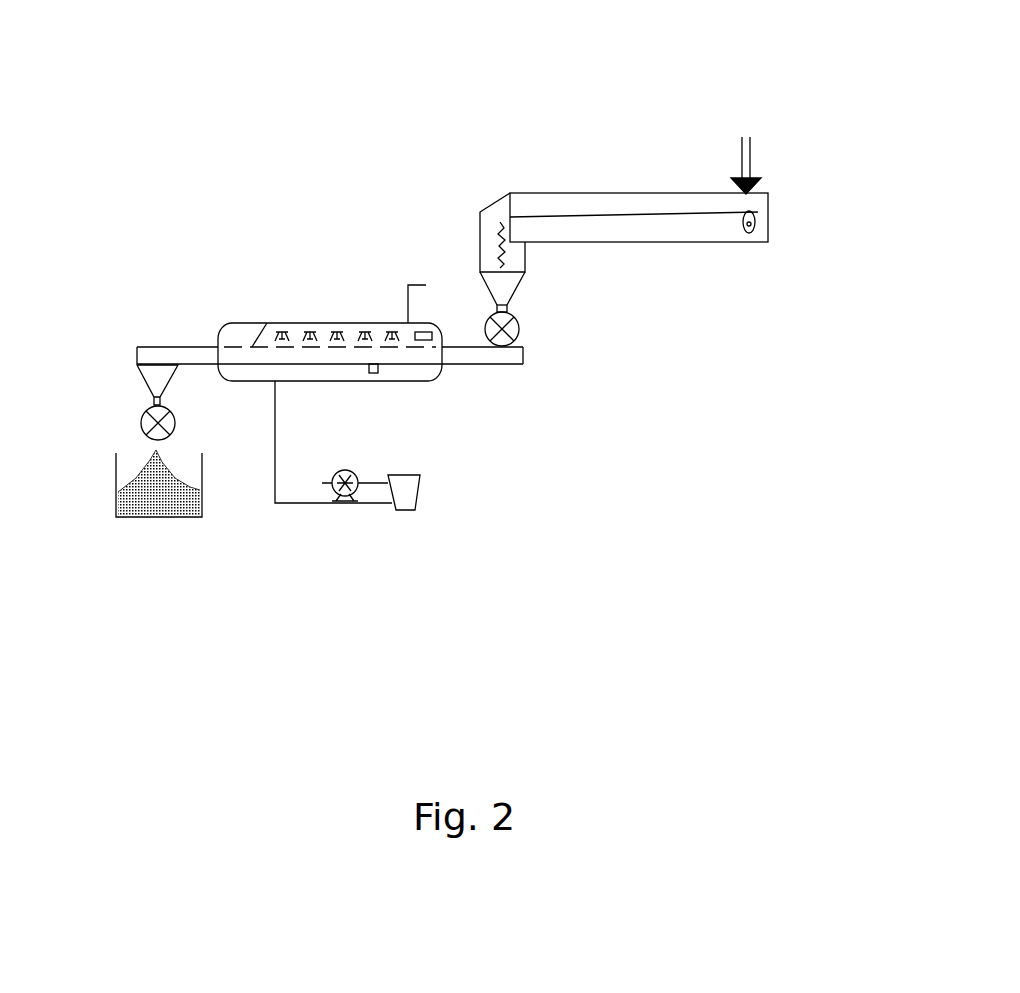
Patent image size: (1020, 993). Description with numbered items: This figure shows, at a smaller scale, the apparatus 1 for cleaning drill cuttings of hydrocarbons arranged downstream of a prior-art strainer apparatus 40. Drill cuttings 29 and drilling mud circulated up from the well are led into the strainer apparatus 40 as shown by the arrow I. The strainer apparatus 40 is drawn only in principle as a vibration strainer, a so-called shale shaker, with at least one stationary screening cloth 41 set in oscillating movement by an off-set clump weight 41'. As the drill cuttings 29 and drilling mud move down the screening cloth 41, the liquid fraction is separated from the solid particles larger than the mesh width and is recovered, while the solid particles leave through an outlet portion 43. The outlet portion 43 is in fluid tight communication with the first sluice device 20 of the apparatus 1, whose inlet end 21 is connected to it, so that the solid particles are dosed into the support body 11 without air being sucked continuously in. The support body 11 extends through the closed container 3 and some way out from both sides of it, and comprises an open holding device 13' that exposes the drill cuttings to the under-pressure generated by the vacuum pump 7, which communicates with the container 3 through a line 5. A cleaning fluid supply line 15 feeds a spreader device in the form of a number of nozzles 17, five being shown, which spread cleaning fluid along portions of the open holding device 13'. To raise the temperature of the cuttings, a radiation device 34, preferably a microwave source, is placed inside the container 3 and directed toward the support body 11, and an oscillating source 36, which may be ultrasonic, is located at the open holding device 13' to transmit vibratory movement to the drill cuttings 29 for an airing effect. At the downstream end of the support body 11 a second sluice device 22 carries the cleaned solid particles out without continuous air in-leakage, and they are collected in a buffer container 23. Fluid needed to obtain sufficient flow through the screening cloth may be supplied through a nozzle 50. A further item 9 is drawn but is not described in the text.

The apparatus 1 is at (143, 208).
The closed container 3 is at (238, 323).
The open holding device 13' is at (278, 235).
The nozzles 17 is at (343, 323).
The cleaning fluid supply line 15 is at (406, 292).
The support body 11 is at (497, 382).
The oscillating source 36 is at (378, 369).
The radiation device 34 is at (442, 331).
The outlet portion 43 is at (480, 233).
The drill cuttings 29 is at (496, 226).
The inlet end 21 is at (525, 270).
The nozzle 50 is at (510, 308).
The first sluice device 20 is at (520, 331).
The strainer apparatus 40 is at (615, 160).
The screening cloth 41 is at (634, 122).
The off-set clump weight 41' is at (804, 230).
The arrow I is at (750, 139).
The second sluice device 22 is at (141, 422).
The buffer container 23 is at (135, 520).
The line 5 is at (298, 503).
The vacuum pump 7 is at (355, 494).
The liquid reservoir 9 is at (421, 495).